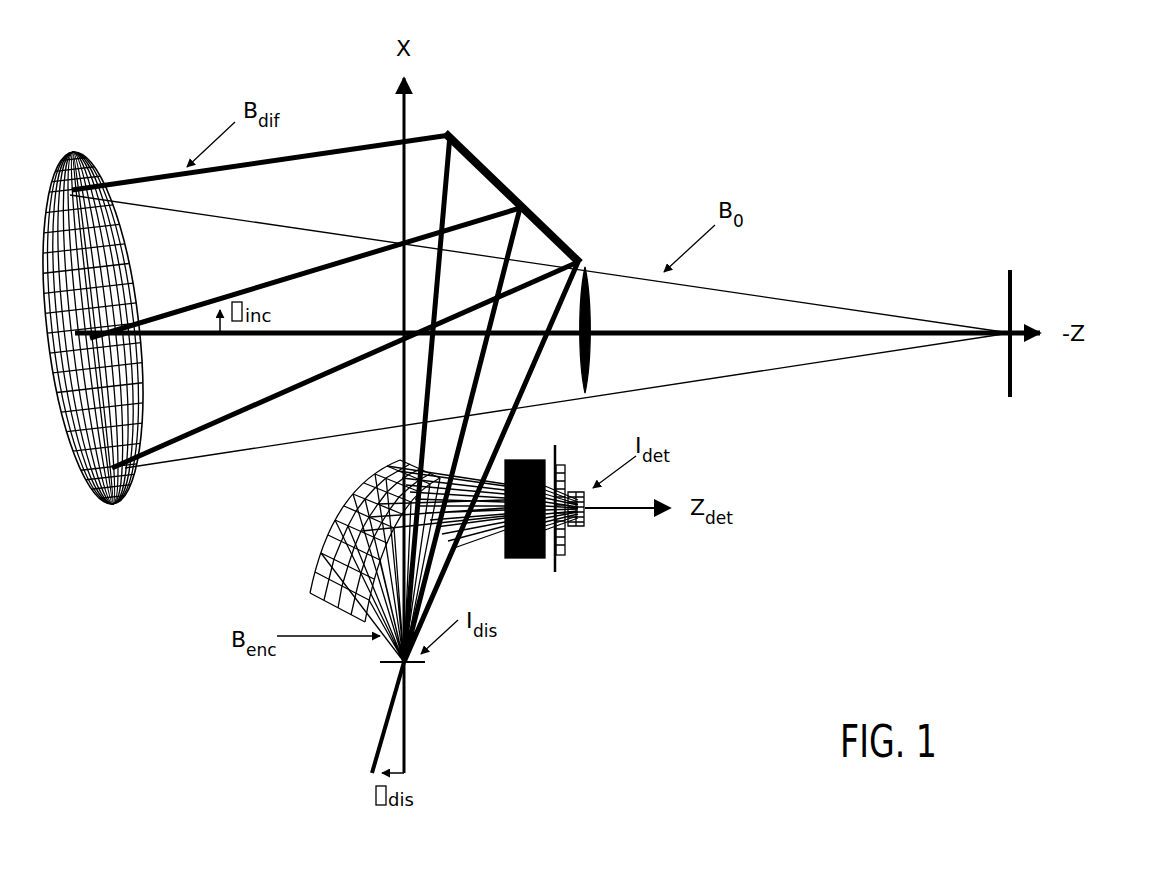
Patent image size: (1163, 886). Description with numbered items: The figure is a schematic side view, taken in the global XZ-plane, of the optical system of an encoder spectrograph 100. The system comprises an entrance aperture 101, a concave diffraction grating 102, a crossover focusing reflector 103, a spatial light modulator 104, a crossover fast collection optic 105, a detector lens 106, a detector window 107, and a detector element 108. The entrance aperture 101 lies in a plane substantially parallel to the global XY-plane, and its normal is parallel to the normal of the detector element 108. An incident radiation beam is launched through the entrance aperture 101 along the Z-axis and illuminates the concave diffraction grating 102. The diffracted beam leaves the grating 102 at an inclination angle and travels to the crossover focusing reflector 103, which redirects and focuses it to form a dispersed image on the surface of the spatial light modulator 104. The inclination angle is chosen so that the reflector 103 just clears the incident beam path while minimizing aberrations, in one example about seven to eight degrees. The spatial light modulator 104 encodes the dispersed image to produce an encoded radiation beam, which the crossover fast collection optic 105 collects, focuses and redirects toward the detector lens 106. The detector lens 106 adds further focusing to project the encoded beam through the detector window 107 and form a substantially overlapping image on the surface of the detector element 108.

The encoder spectrograph 100 is at (836, 168).
The entrance aperture 101 is at (1020, 262).
The concave diffraction grating 102 is at (92, 146).
The crossover focusing reflector 103 is at (535, 193).
The spatial light modulator 104 is at (421, 671).
The crossover fast collection optic 105 is at (312, 563).
The detector lens 106 is at (526, 567).
The detector window 107 is at (572, 564).
The detector element 108 is at (592, 519).